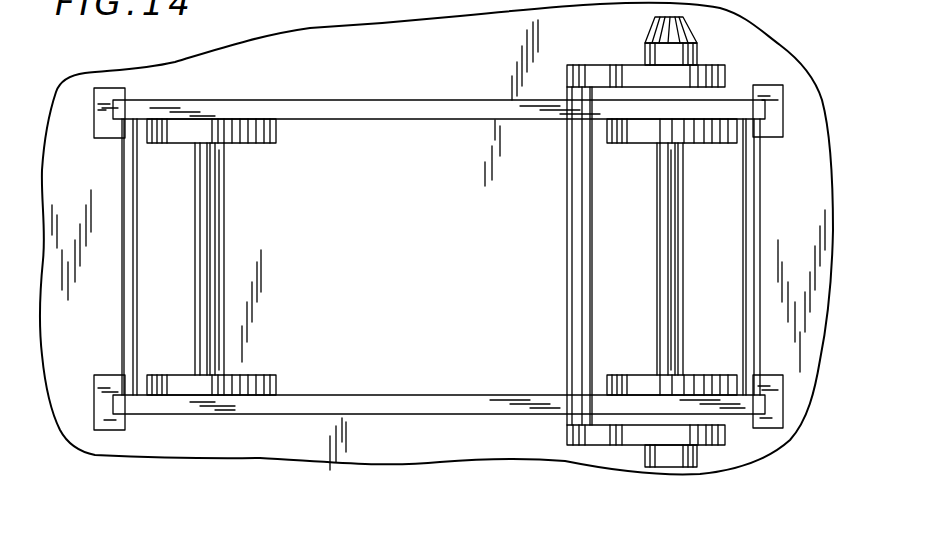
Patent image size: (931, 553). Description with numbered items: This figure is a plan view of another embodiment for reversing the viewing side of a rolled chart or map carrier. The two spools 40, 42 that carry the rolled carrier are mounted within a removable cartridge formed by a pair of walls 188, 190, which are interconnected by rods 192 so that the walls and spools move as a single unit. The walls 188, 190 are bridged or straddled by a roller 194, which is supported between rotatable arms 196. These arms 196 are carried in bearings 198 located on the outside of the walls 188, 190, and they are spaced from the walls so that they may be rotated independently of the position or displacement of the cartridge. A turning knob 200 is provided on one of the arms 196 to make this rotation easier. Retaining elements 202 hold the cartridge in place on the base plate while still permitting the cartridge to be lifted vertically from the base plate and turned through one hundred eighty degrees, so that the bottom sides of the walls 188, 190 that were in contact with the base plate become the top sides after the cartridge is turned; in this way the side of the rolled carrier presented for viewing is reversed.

The wall 188 is at (396, 98).
The wall 190 is at (385, 405).
The rods 192 is at (760, 188).
The roller 194 is at (573, 280).
The rotatable arms 196 is at (725, 76).
The bearings 198 is at (698, 52).
The turning knob 200 is at (652, 30).
The retaining elements 202 is at (118, 421).
The spool 40 is at (212, 355).
The spool 42 is at (672, 353).